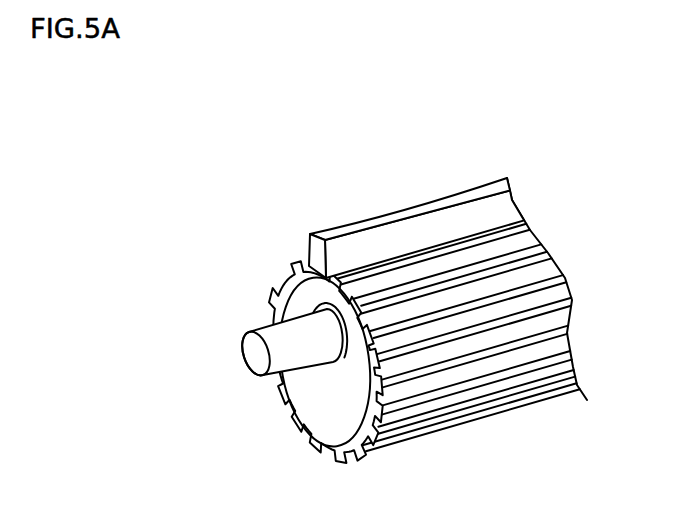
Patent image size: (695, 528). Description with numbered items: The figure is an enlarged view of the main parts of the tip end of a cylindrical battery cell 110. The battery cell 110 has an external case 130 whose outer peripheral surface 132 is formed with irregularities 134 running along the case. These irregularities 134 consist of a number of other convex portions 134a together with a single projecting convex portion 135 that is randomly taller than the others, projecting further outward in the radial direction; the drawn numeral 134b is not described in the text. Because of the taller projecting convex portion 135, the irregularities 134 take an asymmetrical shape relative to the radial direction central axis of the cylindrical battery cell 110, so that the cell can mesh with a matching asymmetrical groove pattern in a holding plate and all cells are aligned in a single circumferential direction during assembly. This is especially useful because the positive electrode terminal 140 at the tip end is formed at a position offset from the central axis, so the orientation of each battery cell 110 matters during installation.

The battery cell 110 is at (390, 293).
The external case 130 is at (428, 340).
The outer peripheral surface 132 is at (483, 419).
The irregularities 134 is at (398, 191).
The other convex portions 134a is at (375, 280).
The second groove portion 134b is at (421, 294).
The projecting convex portion 135 is at (330, 232).
The positive electrode terminal 140 is at (245, 357).